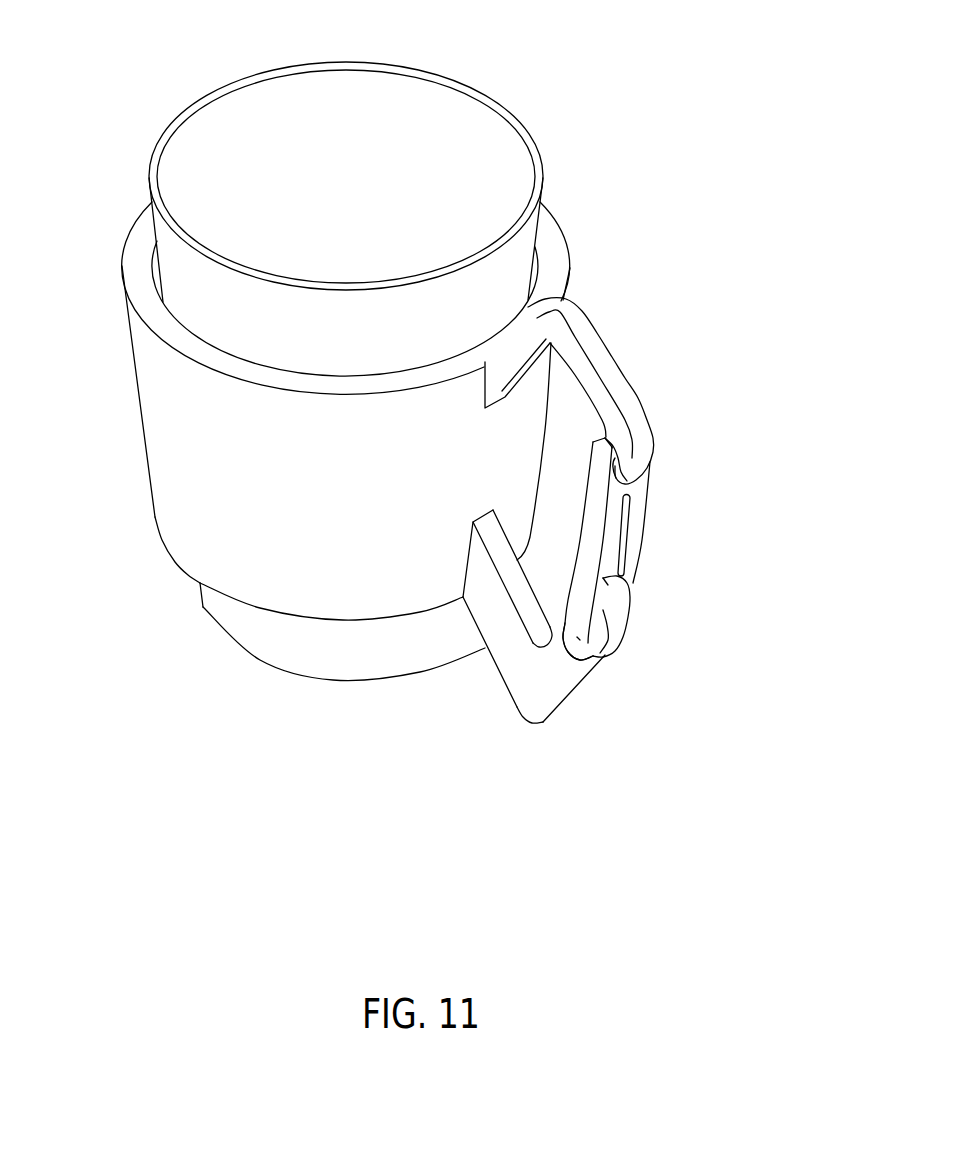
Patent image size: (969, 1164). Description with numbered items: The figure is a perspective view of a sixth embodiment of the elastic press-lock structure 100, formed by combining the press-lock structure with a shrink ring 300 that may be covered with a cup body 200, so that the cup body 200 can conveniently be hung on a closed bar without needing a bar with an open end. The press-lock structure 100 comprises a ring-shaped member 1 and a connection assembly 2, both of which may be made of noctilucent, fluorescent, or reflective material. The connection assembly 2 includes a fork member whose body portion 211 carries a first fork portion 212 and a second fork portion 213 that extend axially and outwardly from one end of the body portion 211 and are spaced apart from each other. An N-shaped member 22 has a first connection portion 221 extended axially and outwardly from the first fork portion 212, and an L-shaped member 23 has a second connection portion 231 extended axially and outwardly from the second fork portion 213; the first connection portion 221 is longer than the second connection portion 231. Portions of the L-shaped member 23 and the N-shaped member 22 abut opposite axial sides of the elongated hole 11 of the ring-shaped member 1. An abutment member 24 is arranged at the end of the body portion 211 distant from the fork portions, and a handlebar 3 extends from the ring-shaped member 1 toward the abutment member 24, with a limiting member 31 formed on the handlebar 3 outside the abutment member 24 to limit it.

The cup body 200 is at (184, 96).
The shrink ring 300 is at (138, 424).
The elastic press-lock structure 100 is at (621, 290).
The handlebar 3 is at (609, 391).
The limiting member 31 is at (640, 455).
The connection assembly 2 is at (697, 584).
The abutment member 24 is at (630, 460).
The body portion 211 is at (628, 492).
The second fork portion 213 is at (632, 520).
The first fork portion 212 is at (608, 551).
The L-shaped member 23 is at (681, 614).
The second connection portion 231 is at (608, 585).
The N-shaped member 22 is at (634, 677).
The first connection portion 221 is at (577, 637).
The ring-shaped member 1 is at (550, 645).
The elongated hole 11 is at (557, 640).